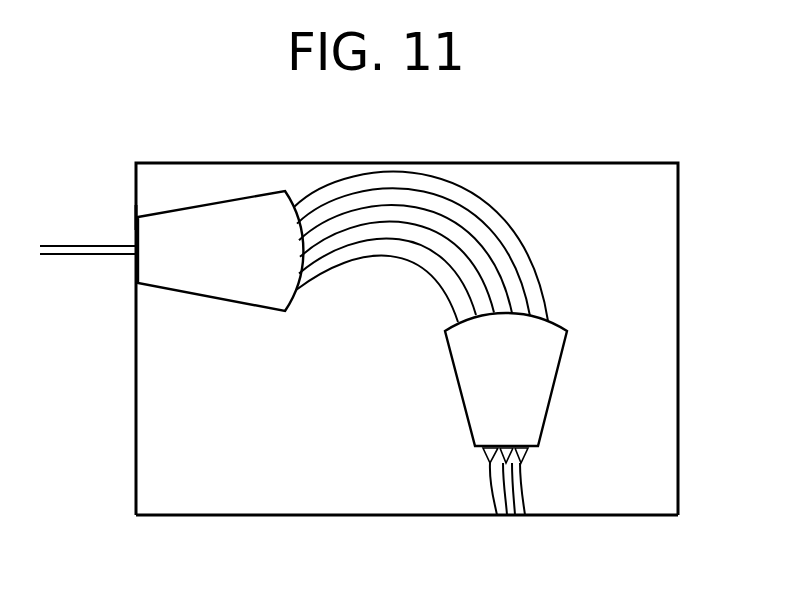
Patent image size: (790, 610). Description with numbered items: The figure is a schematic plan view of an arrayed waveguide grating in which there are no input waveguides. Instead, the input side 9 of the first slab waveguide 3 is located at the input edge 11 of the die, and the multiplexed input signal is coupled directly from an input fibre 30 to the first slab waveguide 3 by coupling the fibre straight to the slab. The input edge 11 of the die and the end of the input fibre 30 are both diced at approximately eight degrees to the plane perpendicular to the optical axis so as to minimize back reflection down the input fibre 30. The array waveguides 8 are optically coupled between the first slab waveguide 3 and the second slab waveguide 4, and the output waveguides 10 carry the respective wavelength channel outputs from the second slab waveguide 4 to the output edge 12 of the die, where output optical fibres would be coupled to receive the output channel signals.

The first slab waveguide 3 is at (210, 297).
The second slab waveguide 4 is at (560, 372).
The array waveguides 8 is at (537, 245).
The input face of the first slab waveguide 9 is at (133, 213).
The output waveguides 10 is at (520, 485).
The input edge of the die 11 is at (136, 408).
The output edge of the die 12 is at (607, 516).
The input fibre 30 is at (88, 257).